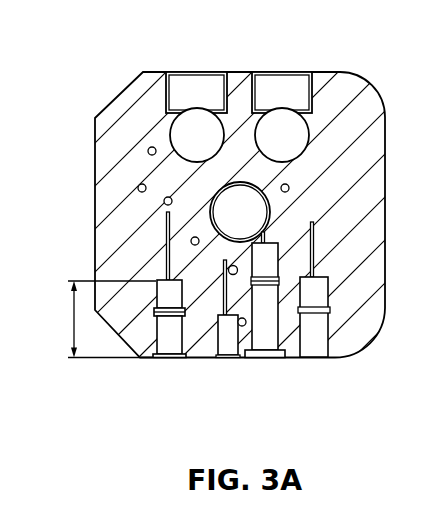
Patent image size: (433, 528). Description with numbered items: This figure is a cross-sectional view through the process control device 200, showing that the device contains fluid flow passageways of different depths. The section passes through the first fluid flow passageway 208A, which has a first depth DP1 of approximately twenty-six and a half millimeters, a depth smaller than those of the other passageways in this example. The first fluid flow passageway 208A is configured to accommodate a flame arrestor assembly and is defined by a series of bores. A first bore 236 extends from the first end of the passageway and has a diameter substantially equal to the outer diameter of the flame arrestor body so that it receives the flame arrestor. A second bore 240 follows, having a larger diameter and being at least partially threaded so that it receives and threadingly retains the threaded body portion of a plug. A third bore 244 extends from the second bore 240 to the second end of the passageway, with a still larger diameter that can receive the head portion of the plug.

The process control device 200 is at (339, 50).
The first fluid flow passageway 208A is at (131, 317).
The first bore 236 is at (172, 295).
The second bore 240 is at (156, 330).
The third bore 244 is at (160, 358).
The first depth DP1 is at (94, 319).